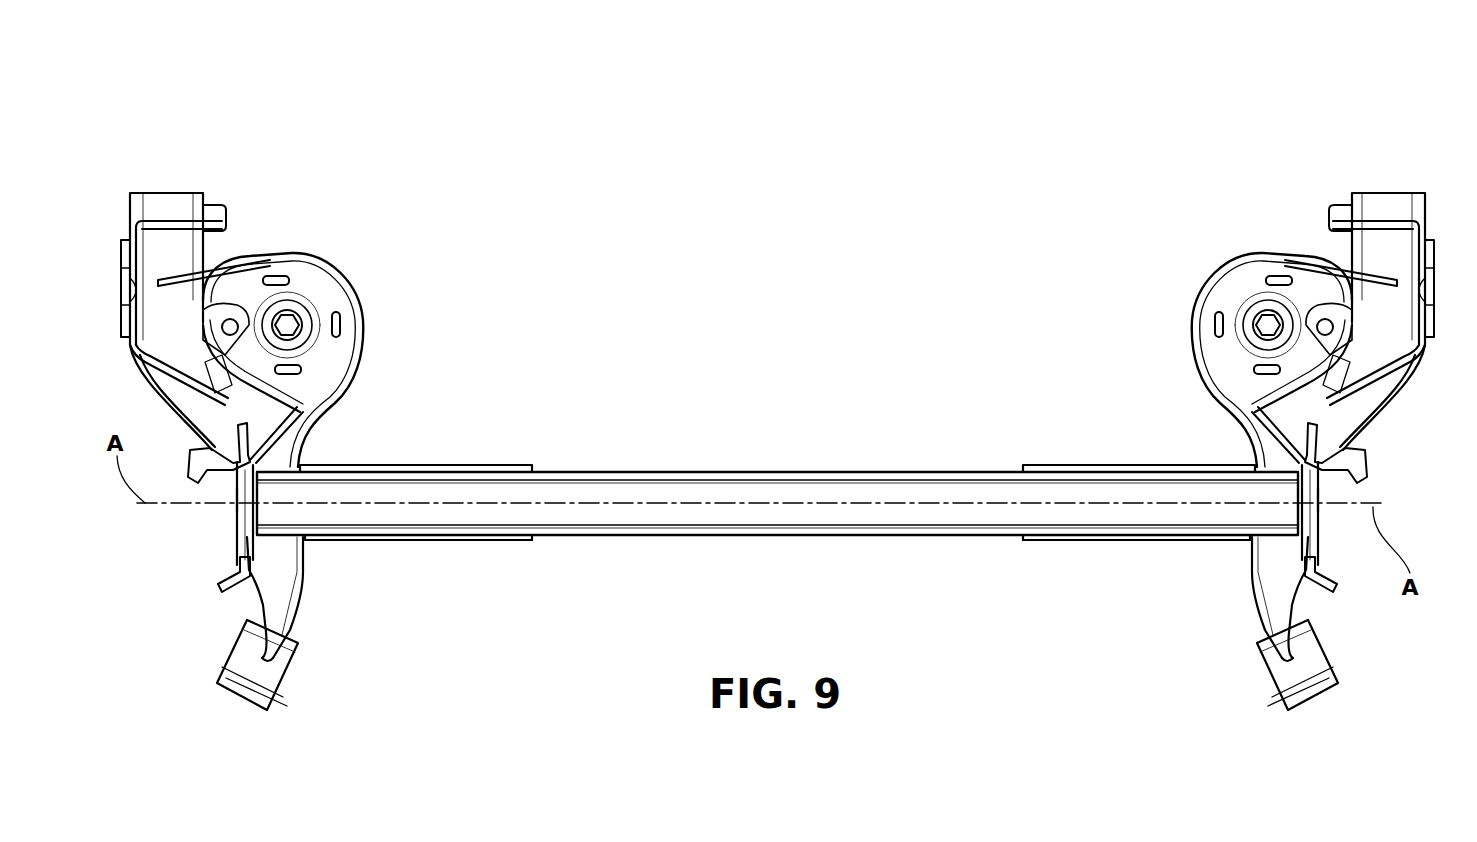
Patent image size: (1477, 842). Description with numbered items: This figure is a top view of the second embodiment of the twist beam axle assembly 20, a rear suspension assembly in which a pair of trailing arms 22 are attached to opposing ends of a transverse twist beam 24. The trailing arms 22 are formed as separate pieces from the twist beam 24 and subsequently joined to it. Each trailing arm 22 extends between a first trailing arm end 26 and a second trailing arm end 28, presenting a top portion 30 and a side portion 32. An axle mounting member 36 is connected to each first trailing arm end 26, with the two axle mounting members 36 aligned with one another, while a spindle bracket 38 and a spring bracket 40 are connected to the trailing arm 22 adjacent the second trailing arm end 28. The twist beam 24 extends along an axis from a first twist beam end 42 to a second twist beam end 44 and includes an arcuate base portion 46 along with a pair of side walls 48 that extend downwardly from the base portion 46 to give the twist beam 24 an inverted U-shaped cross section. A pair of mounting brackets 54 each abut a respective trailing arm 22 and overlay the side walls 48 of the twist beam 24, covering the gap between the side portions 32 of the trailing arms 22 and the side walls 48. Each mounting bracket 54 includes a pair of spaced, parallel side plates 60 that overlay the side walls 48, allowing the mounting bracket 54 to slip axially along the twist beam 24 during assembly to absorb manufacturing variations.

The twist beam axle assembly 20 is at (1128, 178).
The trailing arm 22 is at (240, 520).
The twist beam 24 is at (833, 472).
The first trailing arm end 26 is at (240, 690).
The second trailing arm end 28 is at (173, 200).
The top portion 30 is at (288, 585).
The side portion 32 is at (310, 555).
The axle mounting member 36 is at (280, 690).
The spindle bracket 38 is at (123, 232).
The spring bracket 40 is at (310, 258).
The first twist beam end 42 is at (1322, 498).
The second twist beam end 44 is at (232, 500).
The base portion 46 is at (643, 493).
The side wall 48 is at (578, 472).
The mounting bracket 54 is at (493, 541).
The side plate 60 is at (455, 466).